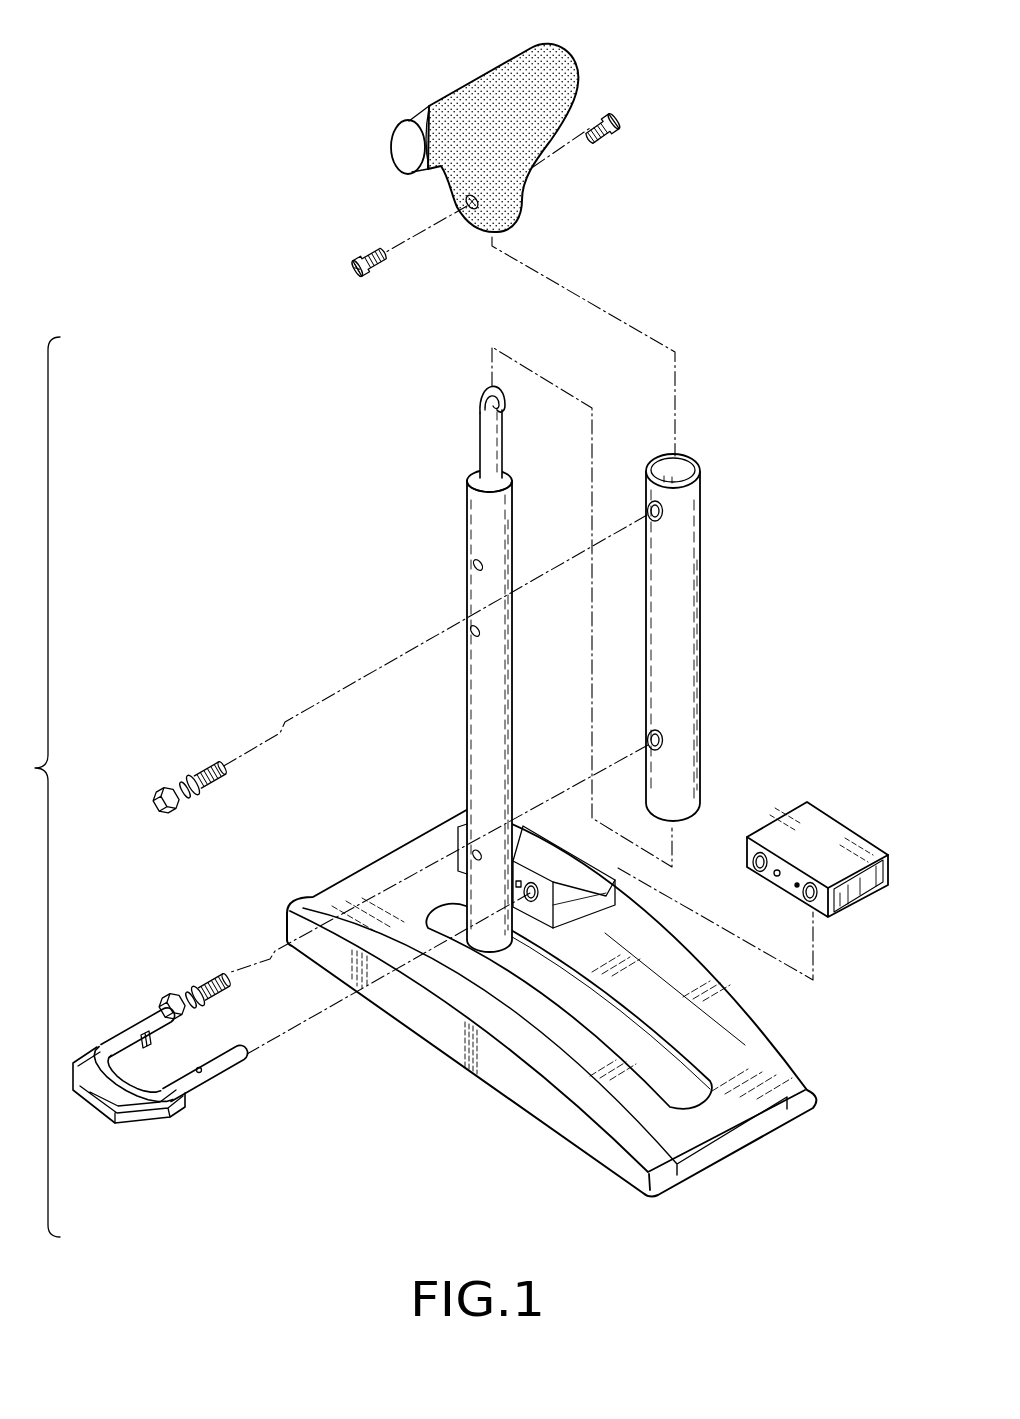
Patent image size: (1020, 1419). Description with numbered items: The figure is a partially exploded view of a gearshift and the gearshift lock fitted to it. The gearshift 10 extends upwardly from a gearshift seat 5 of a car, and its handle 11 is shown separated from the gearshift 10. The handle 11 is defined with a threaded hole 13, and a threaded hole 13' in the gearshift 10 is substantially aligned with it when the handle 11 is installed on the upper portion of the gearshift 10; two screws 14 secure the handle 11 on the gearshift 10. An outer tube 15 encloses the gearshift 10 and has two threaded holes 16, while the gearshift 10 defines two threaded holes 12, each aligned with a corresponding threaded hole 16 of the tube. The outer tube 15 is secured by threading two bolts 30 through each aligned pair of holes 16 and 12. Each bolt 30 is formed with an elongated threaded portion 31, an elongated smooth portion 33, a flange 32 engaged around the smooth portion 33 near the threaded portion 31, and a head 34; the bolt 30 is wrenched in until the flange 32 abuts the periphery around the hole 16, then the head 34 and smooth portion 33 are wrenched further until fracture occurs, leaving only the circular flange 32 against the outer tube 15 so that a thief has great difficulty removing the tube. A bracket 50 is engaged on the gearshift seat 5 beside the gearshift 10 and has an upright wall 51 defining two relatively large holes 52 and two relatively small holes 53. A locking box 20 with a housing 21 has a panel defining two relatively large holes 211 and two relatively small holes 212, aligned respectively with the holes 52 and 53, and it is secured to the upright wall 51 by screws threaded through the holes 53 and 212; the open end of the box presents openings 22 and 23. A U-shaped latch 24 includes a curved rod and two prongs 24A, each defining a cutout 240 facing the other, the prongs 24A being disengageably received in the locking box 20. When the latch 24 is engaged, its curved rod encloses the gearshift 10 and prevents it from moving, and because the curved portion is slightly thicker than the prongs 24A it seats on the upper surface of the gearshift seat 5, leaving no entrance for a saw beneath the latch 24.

The gearshift seat 5 is at (782, 1060).
The gearshift 10 is at (503, 682).
The handle 11 is at (488, 77).
The threaded holes 12 is at (472, 636).
The threaded hole 13 is at (465, 228).
The threaded hole 13' is at (447, 566).
The screws 14 is at (607, 138).
The outer tube 15 is at (694, 587).
The threaded holes 16 is at (646, 512).
The locking box 20 is at (830, 871).
The housing 21 is at (873, 847).
The relatively large holes 211 is at (760, 872).
The relatively small holes 212 is at (797, 889).
The opening 22 is at (843, 890).
The opening 23 is at (867, 893).
The U-shaped latch 24 is at (190, 1073).
The prongs 24A is at (155, 1021).
The cutouts 240 is at (148, 1046).
The bolts 30 is at (197, 871).
The elongated threaded portion 31 is at (221, 778).
The flange 32 is at (198, 794).
The elongated smooth portion 33 is at (188, 800).
The head 34 is at (162, 803).
The bracket 50 is at (567, 862).
The upright wall 51 is at (558, 896).
The relatively large holes 52 is at (532, 902).
The relatively small holes 53 is at (516, 886).